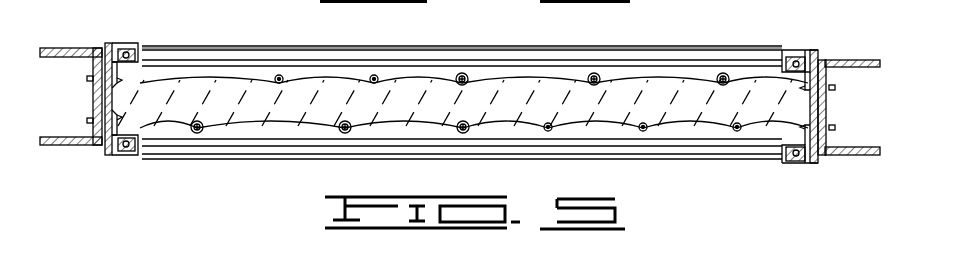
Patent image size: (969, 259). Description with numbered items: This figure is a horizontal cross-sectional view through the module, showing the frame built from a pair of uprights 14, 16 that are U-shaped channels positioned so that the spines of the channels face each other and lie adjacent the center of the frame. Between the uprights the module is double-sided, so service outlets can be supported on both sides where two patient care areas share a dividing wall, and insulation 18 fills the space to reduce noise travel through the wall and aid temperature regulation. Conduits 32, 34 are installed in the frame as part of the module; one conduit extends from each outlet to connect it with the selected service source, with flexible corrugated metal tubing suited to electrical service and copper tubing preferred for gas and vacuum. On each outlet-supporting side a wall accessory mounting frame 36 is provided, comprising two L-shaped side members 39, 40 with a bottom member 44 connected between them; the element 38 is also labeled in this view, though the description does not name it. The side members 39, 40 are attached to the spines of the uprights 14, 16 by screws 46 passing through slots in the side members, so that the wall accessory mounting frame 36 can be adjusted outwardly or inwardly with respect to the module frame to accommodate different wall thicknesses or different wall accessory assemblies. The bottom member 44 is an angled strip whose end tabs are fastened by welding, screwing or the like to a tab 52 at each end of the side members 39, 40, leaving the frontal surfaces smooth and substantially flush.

The upright 14 is at (53, 48).
The upright 16 is at (850, 62).
The insulation 18 is at (615, 118).
The conduit 32 is at (598, 73).
The conduit 34 is at (280, 75).
The wall accessory mounting frame 36 is at (209, 38).
The outer skin 38 is at (154, 38).
The side member 39 is at (112, 44).
The side member 40 is at (795, 52).
The bottom member 44 is at (392, 62).
The screw 46 is at (805, 90).
The tab 52 is at (120, 48).